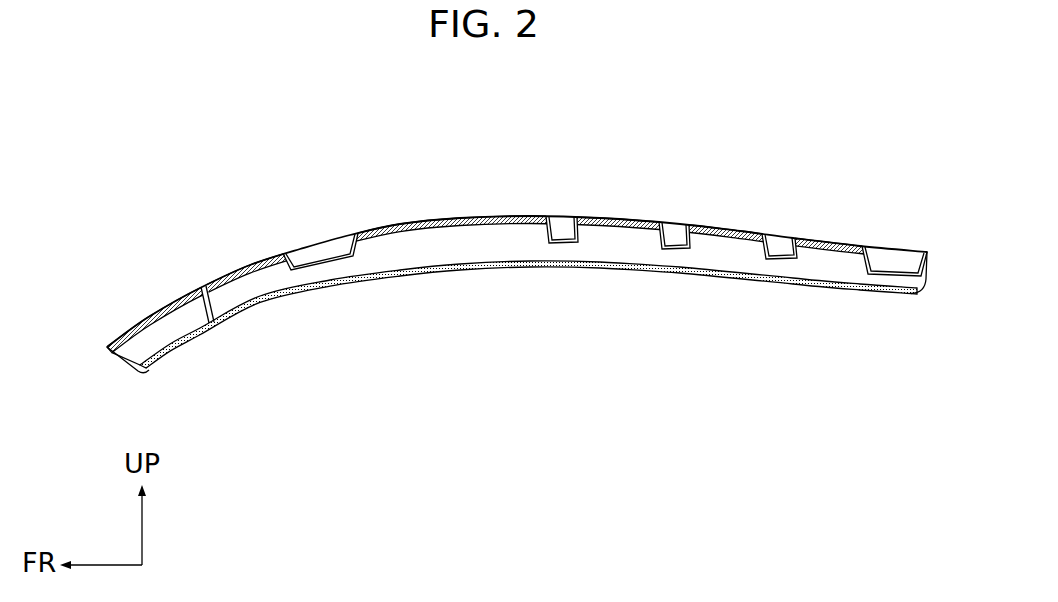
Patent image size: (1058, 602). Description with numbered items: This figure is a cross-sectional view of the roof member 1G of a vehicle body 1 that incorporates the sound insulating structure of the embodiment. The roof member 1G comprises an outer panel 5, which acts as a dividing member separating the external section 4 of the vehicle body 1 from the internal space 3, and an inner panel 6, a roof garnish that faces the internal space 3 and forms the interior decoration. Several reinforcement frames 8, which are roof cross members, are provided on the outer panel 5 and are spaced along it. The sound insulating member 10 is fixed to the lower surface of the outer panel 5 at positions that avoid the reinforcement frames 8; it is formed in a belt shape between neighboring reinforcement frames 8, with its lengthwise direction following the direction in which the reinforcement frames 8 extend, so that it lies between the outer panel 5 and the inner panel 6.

The vehicle body 1 is at (345, 156).
The roof member 1G is at (527, 209).
The internal space 3 is at (432, 357).
The external section 4 is at (430, 168).
The outer panel 5 is at (682, 224).
The inner panel 6 is at (697, 275).
The reinforcement frame 8 is at (183, 343).
The sound insulating member 10 is at (255, 265).